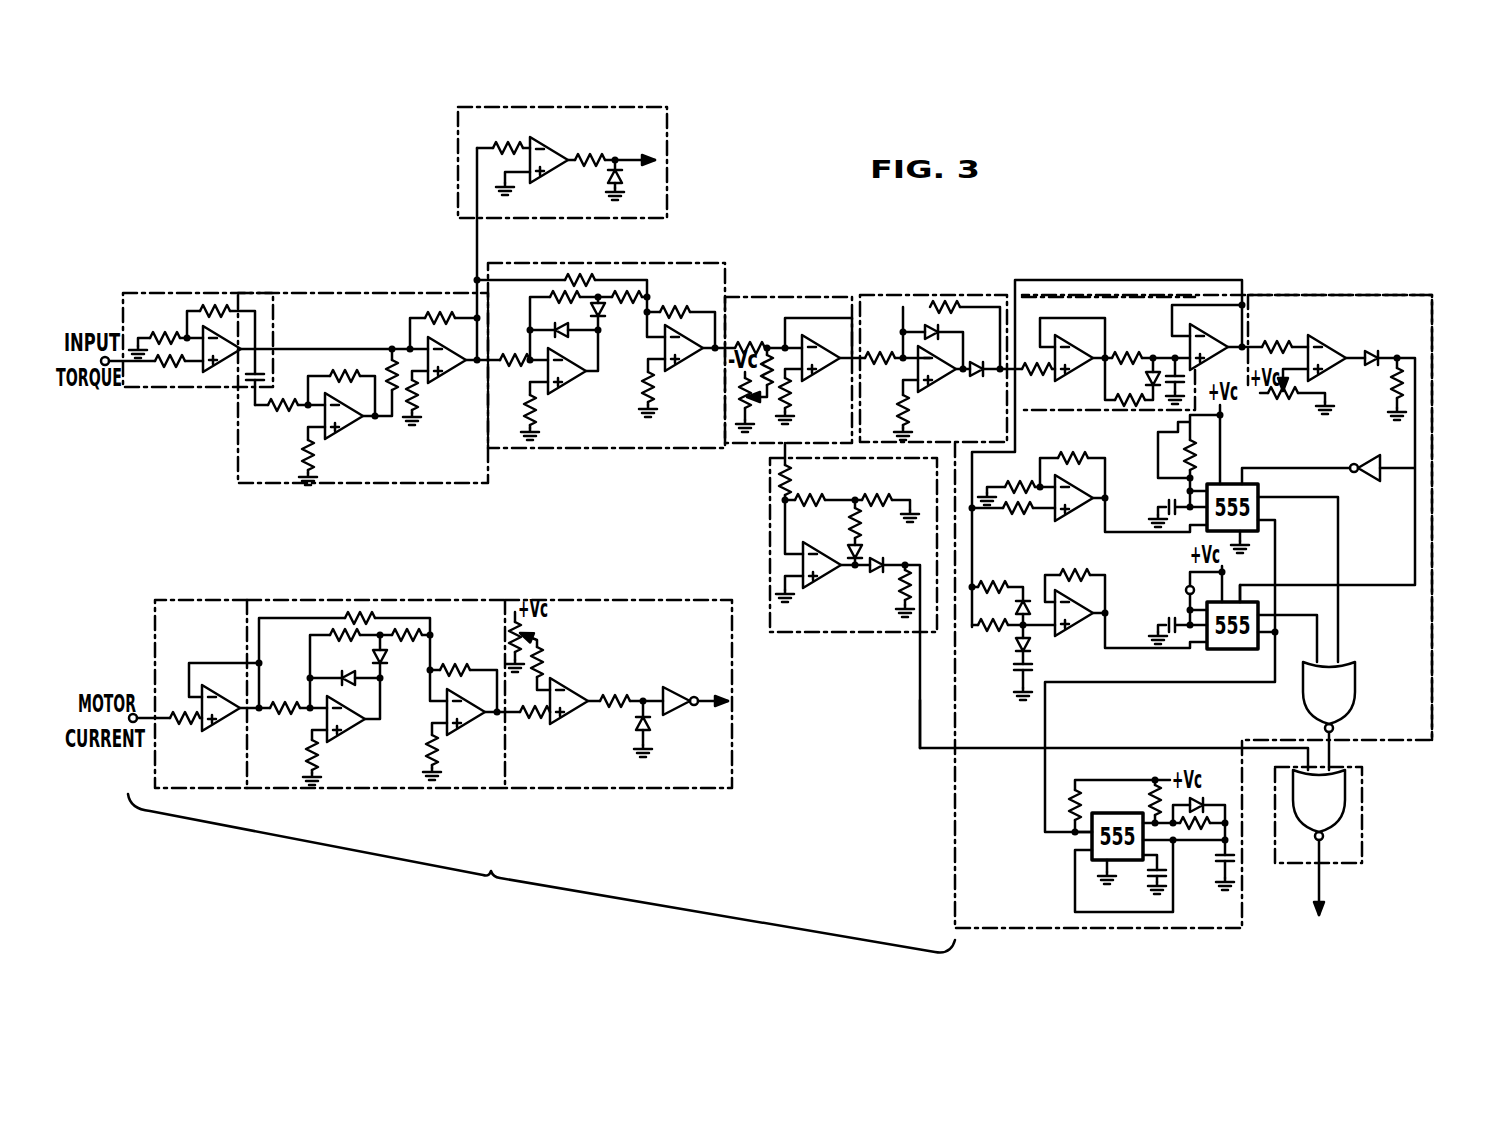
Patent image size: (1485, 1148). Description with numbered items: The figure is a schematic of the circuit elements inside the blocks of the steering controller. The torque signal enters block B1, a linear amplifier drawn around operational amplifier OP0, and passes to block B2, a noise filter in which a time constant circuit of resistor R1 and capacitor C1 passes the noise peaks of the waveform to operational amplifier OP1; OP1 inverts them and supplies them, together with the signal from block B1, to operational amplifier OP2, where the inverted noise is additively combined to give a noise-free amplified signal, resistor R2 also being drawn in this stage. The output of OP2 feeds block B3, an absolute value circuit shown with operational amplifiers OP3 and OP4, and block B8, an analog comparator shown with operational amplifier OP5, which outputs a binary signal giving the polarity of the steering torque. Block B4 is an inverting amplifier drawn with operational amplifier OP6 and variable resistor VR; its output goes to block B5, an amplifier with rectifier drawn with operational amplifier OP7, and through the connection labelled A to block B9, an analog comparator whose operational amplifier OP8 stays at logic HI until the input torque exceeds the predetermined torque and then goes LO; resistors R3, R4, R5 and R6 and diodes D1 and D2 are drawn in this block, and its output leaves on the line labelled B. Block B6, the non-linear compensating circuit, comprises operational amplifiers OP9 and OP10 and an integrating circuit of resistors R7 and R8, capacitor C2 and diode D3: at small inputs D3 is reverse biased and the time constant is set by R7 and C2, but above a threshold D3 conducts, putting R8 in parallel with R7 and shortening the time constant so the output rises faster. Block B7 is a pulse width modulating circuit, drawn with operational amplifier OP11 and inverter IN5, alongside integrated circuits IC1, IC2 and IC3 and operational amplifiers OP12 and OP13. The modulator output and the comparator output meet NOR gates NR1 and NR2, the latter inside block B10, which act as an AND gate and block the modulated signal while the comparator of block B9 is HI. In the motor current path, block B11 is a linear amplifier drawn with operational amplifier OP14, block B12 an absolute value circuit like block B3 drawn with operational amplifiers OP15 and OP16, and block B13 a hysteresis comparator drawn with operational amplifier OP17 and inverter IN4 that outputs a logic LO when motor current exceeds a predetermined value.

The linear amplifier block B1 is at (198, 340).
The noise filter block B2 is at (363, 388).
The absolute value circuit block B3 is at (606, 355).
The inverting amplifier block B4 is at (788, 370).
The amplifier with rectifier block B5 is at (933, 368).
The non-linear compensating circuit block B6 is at (1108, 355).
The pulse width modulating circuit block B7 is at (1340, 517).
The analog comparator block B8 is at (562, 162).
The analog comparator block B9 is at (853, 545).
The NOR gate block B10 is at (1318, 815).
The linear amplifier block B11 is at (201, 694).
The absolute value circuit block B12 is at (376, 694).
The hysteresis analog comparator block B13 is at (618, 694).
The operational amplifier OP0 is at (219, 380).
The operational amplifier OP1 is at (345, 430).
The operational amplifier OP2 is at (455, 383).
The operational amplifier OP3 is at (580, 394).
The operational amplifier OP4 is at (690, 372).
The operational amplifier OP5 is at (565, 183).
The operational amplifier OP6 is at (826, 381).
The operational amplifier OP7 is at (930, 384).
The operational amplifier OP8 is at (832, 588).
The operational amplifier OP9 is at (1080, 400).
The operational amplifier OP10 is at (1200, 340).
The operational amplifier OP11 is at (1332, 374).
The operational amplifier OP12 is at (1080, 522).
The operational amplifier OP13 is at (1090, 640).
The operational amplifier OP14 is at (228, 722).
The operational amplifier OP15 is at (335, 731).
The operational amplifier OP16 is at (478, 736).
The operational amplifier OP17 is at (575, 688).
The resistor R1 is at (285, 410).
The resistor R2 is at (388, 366).
The resistor R3 is at (780, 482).
The resistor R4 is at (862, 511).
The resistor R5 is at (882, 497).
The resistor R6 is at (820, 506).
The resistor R7 is at (1128, 356).
The resistor R8 is at (1133, 408).
The capacitor C1 is at (269, 377).
The capacitor C2 is at (1172, 358).
The diode D1 is at (868, 550).
The diode D2 is at (876, 576).
The diode D3 is at (1148, 379).
The variable resistor VR is at (742, 397).
The 555 timer IC IC1 is at (1258, 495).
The 555 timer IC IC2 is at (1250, 651).
The 555 timer IC IC3 is at (1126, 812).
The inverter IN4 is at (686, 688).
The inverter IN5 is at (1362, 463).
The NOR gate NR1 is at (1352, 695).
The NOR gate NR2 is at (1345, 808).
The node A is at (785, 452).
The node B is at (920, 652).